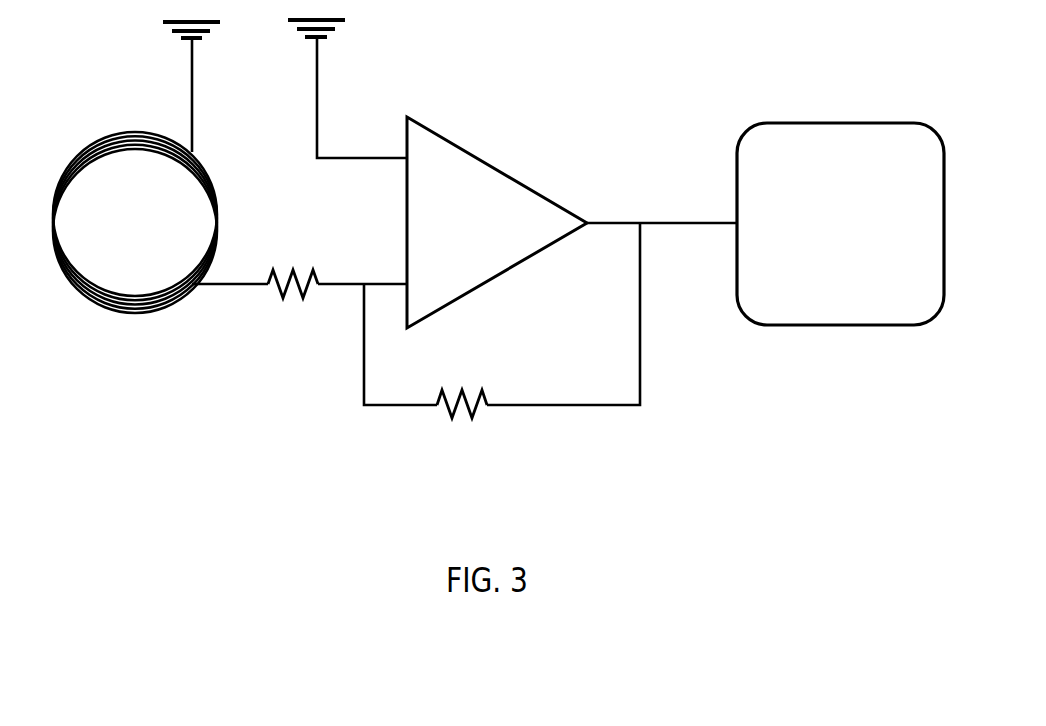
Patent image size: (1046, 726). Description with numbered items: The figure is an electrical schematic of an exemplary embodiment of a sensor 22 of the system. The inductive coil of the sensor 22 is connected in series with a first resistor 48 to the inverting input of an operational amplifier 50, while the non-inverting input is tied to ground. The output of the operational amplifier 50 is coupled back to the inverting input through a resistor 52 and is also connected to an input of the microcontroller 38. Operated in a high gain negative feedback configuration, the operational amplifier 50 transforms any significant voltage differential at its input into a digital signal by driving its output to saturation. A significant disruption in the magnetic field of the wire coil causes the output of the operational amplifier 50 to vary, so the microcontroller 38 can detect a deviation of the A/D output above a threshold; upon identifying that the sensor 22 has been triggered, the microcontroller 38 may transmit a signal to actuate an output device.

The sensor 22 is at (77, 157).
The first resistor 48 is at (303, 297).
The operational amplifier 50 is at (500, 170).
The resistor 52 is at (470, 420).
The microcontroller 38 is at (737, 183).